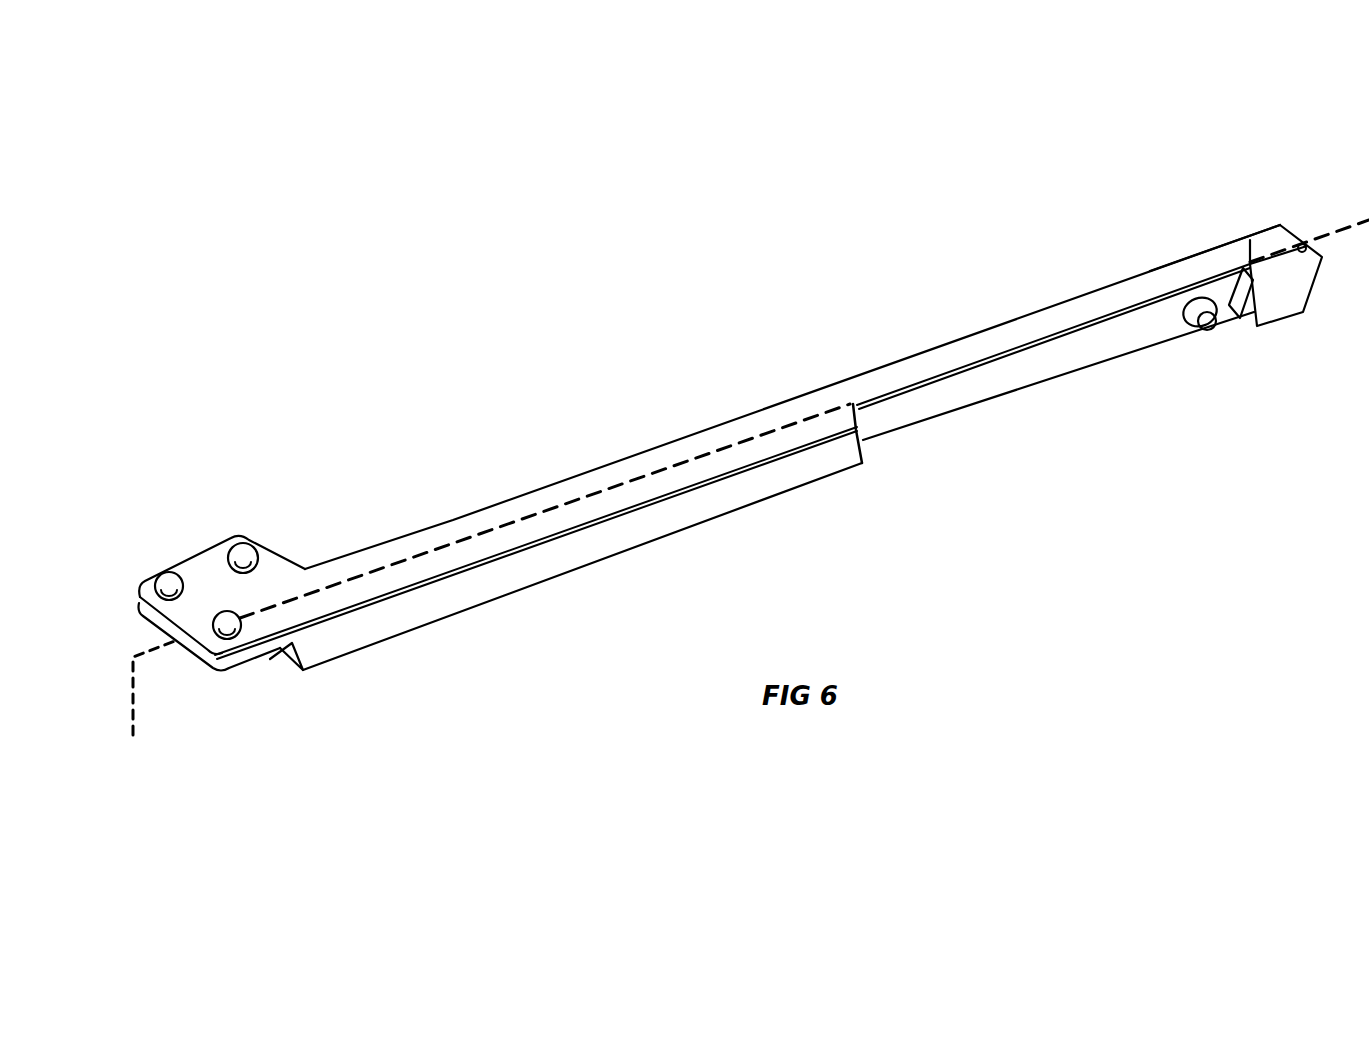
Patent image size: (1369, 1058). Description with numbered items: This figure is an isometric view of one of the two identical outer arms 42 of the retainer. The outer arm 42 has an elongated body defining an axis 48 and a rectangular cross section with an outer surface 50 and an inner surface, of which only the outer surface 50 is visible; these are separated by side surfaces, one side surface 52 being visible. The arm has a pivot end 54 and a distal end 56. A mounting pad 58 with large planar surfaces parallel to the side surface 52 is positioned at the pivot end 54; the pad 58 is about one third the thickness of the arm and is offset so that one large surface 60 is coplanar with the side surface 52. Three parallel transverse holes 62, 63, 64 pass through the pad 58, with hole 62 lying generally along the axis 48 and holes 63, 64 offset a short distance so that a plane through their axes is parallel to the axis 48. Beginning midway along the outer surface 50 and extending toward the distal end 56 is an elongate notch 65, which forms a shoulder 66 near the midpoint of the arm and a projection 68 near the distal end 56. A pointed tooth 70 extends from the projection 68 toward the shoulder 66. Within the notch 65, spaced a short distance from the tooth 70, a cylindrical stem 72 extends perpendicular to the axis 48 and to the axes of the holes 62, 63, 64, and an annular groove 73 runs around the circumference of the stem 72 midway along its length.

The outer arm 42 is at (792, 397).
The axis 48 is at (144, 703).
The outer surface 50 is at (193, 612).
The side surface 52 is at (453, 522).
The pivot end 54 is at (255, 653).
The distal end 56 is at (1232, 243).
The mounting pad 58 is at (195, 547).
The large surface 60 is at (557, 580).
The hole 62 is at (217, 660).
The hole 63 is at (162, 572).
The hole 64 is at (253, 543).
The elongate notch 65 is at (992, 398).
The shoulder 66 is at (863, 462).
The projection 68 is at (1298, 313).
The pointed tooth 70 is at (1236, 317).
The cylindrical stem 72 is at (1208, 330).
The annular groove 73 is at (1185, 322).